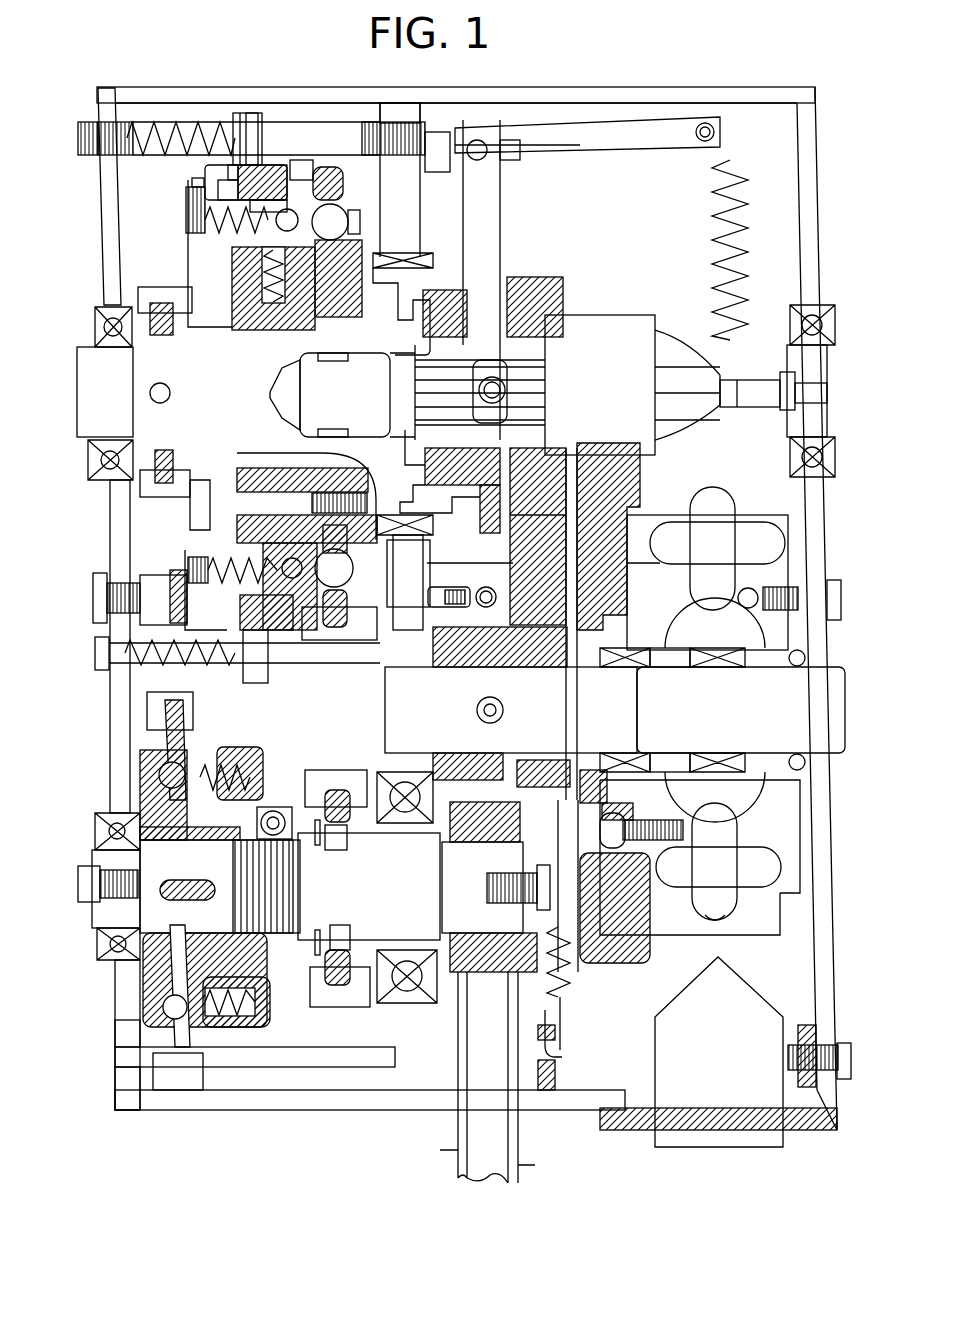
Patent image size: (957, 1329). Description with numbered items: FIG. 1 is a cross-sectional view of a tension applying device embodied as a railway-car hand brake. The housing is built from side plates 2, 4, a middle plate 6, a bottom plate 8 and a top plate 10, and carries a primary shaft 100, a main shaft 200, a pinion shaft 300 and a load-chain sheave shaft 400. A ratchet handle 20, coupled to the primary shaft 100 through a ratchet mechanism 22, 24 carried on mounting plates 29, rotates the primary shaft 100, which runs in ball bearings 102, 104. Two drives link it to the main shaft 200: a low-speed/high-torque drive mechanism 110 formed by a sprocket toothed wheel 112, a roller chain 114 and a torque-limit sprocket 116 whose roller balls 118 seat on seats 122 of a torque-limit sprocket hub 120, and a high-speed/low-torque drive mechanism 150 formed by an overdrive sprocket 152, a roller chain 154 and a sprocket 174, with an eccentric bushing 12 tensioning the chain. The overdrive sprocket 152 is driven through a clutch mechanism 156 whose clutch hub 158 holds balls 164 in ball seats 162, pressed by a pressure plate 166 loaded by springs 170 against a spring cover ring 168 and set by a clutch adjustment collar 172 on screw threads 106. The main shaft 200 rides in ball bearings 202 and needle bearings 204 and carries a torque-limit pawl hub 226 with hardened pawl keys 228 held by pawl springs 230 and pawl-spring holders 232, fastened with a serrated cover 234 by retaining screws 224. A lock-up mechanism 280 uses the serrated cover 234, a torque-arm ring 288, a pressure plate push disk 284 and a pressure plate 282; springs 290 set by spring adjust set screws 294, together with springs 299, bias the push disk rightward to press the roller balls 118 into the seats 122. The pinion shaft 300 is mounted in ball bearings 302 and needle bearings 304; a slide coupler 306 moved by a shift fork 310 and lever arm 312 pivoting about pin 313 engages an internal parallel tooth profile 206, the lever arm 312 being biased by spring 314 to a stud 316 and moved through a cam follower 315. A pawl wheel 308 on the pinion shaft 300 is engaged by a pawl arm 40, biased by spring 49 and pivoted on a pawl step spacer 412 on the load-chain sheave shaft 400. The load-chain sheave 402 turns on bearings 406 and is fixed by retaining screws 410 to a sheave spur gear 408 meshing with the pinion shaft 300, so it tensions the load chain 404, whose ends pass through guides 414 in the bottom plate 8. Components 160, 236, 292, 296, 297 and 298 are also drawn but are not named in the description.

The side plate 2 is at (98, 95).
The side plate 4 is at (815, 152).
The middle plate 6 is at (470, 108).
The bottom plate 8 is at (568, 1100).
The top plate 10 is at (748, 95).
The eccentric bushing 12 is at (137, 617).
The ratchet handle 20 is at (487, 1175).
The ratchet mechanism 22 is at (487, 972).
The ratchet mechanism 24 is at (477, 933).
The mounting plates 29 is at (458, 1160).
The pawl arm 40 is at (547, 515).
The spring 49 is at (572, 982).
The primary shaft 100 is at (305, 920).
The ball bearings 102 is at (110, 960).
The ball bearings 104 is at (412, 1003).
The screw threads 106 is at (298, 868).
The low-speed/high-torque drive mechanism 110 is at (346, 1052).
The sprocket toothed wheel 112 is at (345, 965).
The roller chain 114 is at (352, 1020).
The torque-limit sprocket 116 is at (362, 100).
The roller balls 118 is at (283, 232).
The torque-limit sprocket hub 120 is at (403, 222).
The seats 122 is at (420, 285).
The high-speed/low-torque drive mechanism 150 is at (206, 1080).
The overdrive sprocket 152 is at (118, 1110).
The roller chain 154 is at (100, 300).
The clutch mechanism 156 is at (125, 1042).
The clutch hub 158 is at (100, 826).
The magnet 160 is at (189, 875).
The ball seats 162 is at (160, 775).
The release balls 164 is at (140, 800).
The pressure plate 166 is at (203, 763).
The spring cover ring 168 is at (512, 152).
The springs 170 is at (258, 750).
The clutch adjustment collar 172 is at (285, 803).
The sprocket 174 is at (113, 300).
The main shaft 200 is at (133, 367).
The ball bearings 202 is at (105, 462).
The needle bearings 204 is at (433, 527).
The internal parallel tooth profile 206 is at (465, 250).
The retaining screws 224 is at (190, 525).
The torque-limit pawl hub 226 is at (188, 300).
The hardened pawl keys 228 is at (235, 335).
The pawl springs 230 is at (250, 302).
The pawl-spring holders 232 is at (262, 276).
The serrated cover 234 is at (172, 395).
The pin 236 is at (230, 178).
The lock-up mechanism 280 is at (266, 100).
The pressure plate 282 is at (333, 165).
The pressure plate push disk 284 is at (300, 160).
The torque-arm ring 288 is at (275, 165).
The springs 290 is at (192, 183).
The knob 292 is at (215, 190).
The spring adjust set screws 294 is at (186, 218).
The pin 296 is at (236, 160).
The plate 297 is at (248, 160).
The plate 298 is at (408, 110).
The springs 299 is at (148, 118).
The pinion shaft 300 is at (745, 440).
The ball bearings 302 is at (835, 330).
The needle bearings 304 is at (295, 352).
The slide coupler 306 is at (470, 290).
The pawl wheel 308 is at (562, 278).
The shift fork 310 is at (500, 272).
The lever arm 312 is at (688, 110).
The pin 313 is at (482, 135).
The spring 314 is at (738, 225).
The cam follower 315 is at (578, 145).
The stud 316 is at (827, 393).
The load-chain sheave shaft 400 is at (815, 700).
The load-chain sheave 402 is at (770, 818).
The load chain 404 is at (720, 908).
The bearings 406 is at (815, 648).
The sheave spur gear 408 is at (655, 945).
The retaining screws 410 is at (620, 817).
The pawl step spacer 412 is at (537, 657).
The guides 414 is at (770, 1075).